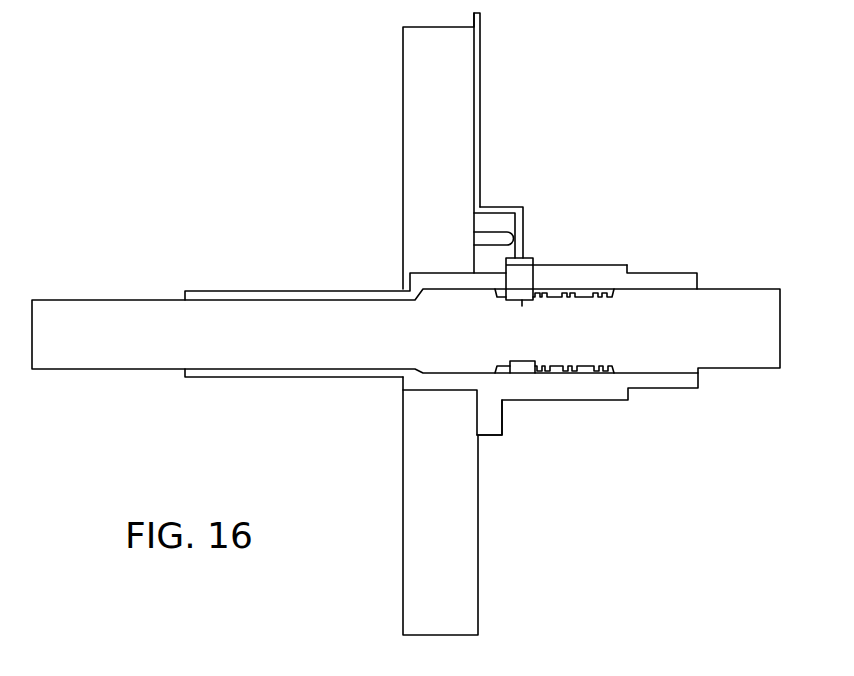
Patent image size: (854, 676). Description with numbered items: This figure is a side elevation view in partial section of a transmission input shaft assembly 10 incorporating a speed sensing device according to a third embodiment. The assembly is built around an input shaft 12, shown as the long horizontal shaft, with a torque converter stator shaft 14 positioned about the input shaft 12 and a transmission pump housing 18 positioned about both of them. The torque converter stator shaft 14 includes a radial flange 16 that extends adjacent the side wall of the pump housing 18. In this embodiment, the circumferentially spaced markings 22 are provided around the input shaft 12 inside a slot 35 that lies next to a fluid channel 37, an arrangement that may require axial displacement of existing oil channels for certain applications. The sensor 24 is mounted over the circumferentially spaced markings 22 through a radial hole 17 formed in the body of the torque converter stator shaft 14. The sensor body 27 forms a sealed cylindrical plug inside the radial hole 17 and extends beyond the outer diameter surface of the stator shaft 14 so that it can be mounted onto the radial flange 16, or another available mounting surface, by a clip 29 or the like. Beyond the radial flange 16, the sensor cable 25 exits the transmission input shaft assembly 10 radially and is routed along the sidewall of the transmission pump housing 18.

The transmission input shaft assembly 10 is at (658, 113).
The input shaft 12 is at (138, 370).
The torque converter stator shaft 14 is at (300, 378).
The radial flange 16 is at (505, 427).
The radial hole 17 is at (505, 279).
The transmission pump housing 18 is at (478, 566).
The circumferentially spaced markings 22 is at (523, 370).
The sensor 24 is at (537, 265).
The sensor cable 25 is at (480, 68).
The sensor body 27 is at (527, 258).
The clip 29 is at (513, 212).
The slot 35 is at (522, 305).
The fluid channel 37 is at (585, 290).